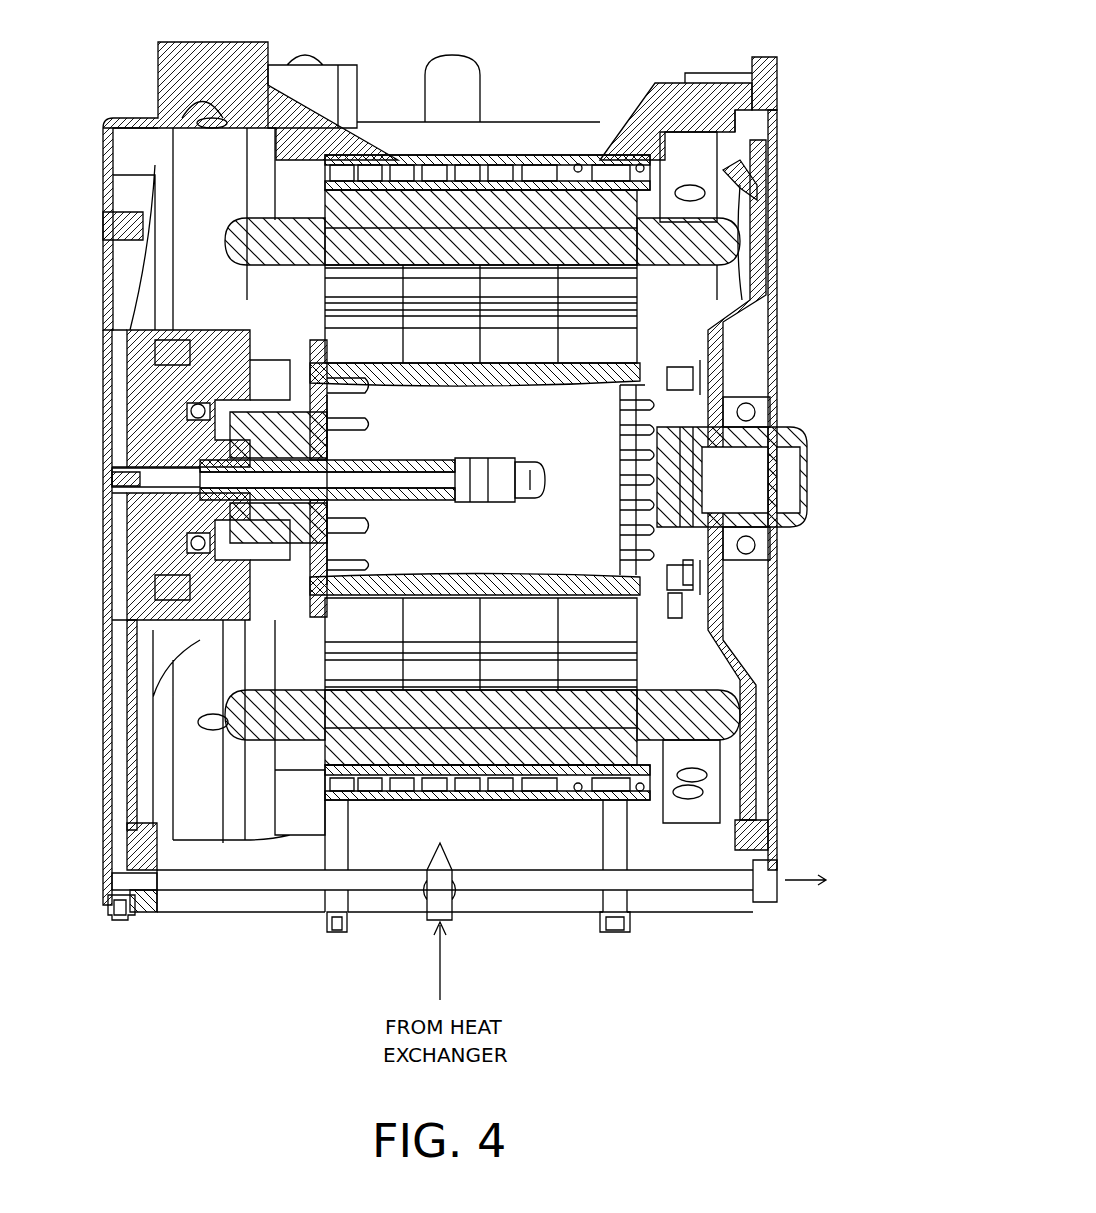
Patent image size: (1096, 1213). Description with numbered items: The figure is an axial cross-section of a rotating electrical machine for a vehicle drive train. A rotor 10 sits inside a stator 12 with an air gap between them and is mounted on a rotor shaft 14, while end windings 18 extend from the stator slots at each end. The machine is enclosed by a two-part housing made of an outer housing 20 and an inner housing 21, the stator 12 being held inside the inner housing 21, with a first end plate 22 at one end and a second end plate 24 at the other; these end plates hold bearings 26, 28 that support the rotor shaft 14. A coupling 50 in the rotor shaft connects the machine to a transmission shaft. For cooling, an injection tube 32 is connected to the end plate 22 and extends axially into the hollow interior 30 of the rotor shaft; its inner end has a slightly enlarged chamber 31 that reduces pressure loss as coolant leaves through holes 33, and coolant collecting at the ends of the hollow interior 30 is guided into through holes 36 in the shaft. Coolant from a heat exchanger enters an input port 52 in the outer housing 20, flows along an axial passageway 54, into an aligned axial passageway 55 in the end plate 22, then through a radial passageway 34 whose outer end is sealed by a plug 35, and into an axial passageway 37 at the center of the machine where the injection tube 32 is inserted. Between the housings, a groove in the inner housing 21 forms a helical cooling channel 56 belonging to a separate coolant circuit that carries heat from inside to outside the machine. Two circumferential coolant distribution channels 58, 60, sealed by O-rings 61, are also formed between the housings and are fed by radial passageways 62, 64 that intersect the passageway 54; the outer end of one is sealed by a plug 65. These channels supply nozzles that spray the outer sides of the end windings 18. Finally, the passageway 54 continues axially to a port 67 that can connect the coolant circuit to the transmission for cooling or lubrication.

The rotor 10 is at (494, 351).
The stator 12 is at (492, 217).
The rotor shaft 14 is at (492, 395).
The end windings 18 is at (277, 250).
The outer housing 20 is at (777, 85).
The inner housing 21 is at (745, 150).
The first end plate 22 is at (100, 248).
The second end plate 24 is at (777, 250).
The bearing 26 is at (145, 545).
The bearing 28 is at (770, 560).
The hollow interior 30 is at (559, 435).
The chamber 31 is at (505, 460).
The injection tube 32 is at (412, 500).
The holes 33 is at (497, 502).
The passageway 34 is at (103, 690).
The plug 35 is at (108, 915).
The through holes 36 is at (765, 345).
The axial passageway 37 is at (112, 478).
The coupling 50 is at (762, 487).
The input port 52 is at (452, 916).
The passageway 54 is at (198, 890).
The axial passageway 55 is at (140, 912).
The cooling channel 56 is at (512, 165).
The coolant distribution channel 58 is at (340, 165).
The coolant distribution channel 60 is at (608, 165).
The O-rings 61 is at (578, 164).
The radial passageway 62 is at (322, 872).
The radial passageway 64 is at (618, 905).
The plug 65 is at (335, 932).
The port 67 is at (765, 903).